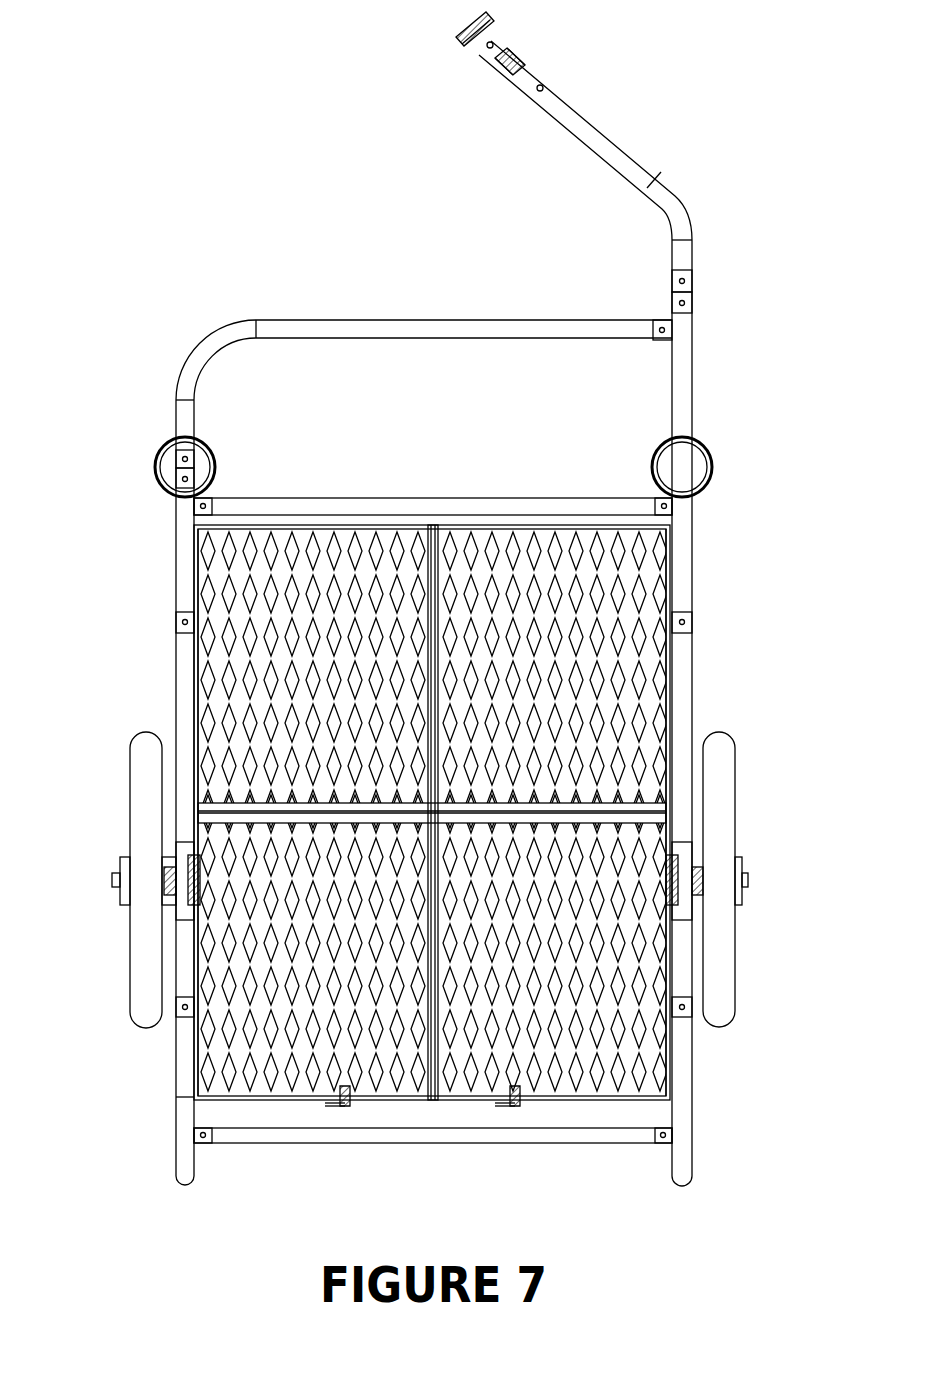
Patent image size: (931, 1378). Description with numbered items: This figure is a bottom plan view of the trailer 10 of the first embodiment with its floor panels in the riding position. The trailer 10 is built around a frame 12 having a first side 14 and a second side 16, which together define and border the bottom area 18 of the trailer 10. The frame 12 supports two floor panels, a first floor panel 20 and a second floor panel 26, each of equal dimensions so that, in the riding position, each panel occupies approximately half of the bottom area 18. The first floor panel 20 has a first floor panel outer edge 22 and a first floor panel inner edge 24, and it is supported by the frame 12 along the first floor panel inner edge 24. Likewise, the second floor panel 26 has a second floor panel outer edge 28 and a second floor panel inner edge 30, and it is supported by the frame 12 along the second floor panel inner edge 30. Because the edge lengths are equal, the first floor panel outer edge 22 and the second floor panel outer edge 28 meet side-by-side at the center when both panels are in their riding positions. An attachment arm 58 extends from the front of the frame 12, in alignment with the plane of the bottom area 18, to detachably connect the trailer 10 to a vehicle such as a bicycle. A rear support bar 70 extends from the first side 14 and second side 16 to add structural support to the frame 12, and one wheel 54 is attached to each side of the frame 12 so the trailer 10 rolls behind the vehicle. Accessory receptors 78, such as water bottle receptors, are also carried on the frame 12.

The trailer 10 is at (248, 62).
The frame 12 is at (372, 330).
The first side 14 is at (684, 720).
The second side 16 is at (188, 678).
The bottom area 18 is at (458, 612).
The first floor panel 20 is at (570, 590).
The first floor panel outer edge 22 is at (440, 1052).
The first floor panel inner edge 24 is at (668, 1052).
The second floor panel 26 is at (325, 660).
The second floor panel outer edge 28 is at (420, 1010).
The second floor panel inner edge 30 is at (220, 1055).
The wheel 54 is at (147, 893).
The attachment arm 58 is at (575, 110).
The rear support bar 70 is at (252, 1133).
The accessory receptors 78 is at (157, 471).